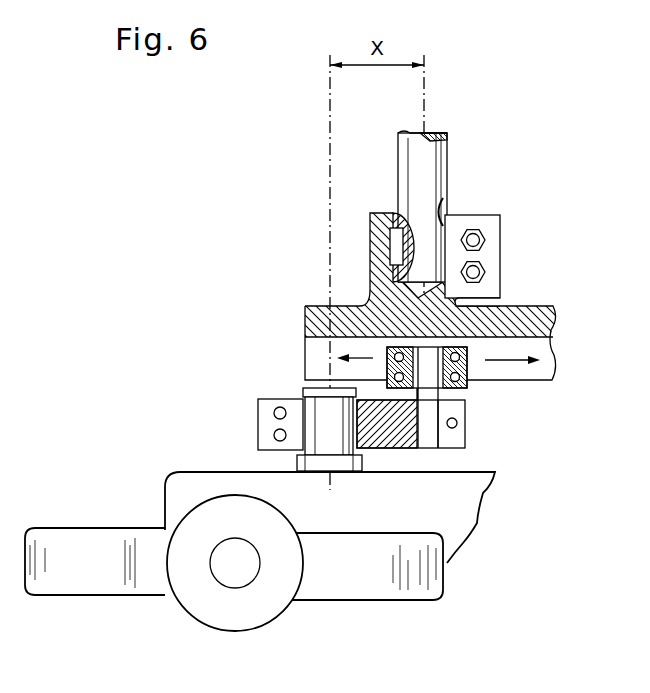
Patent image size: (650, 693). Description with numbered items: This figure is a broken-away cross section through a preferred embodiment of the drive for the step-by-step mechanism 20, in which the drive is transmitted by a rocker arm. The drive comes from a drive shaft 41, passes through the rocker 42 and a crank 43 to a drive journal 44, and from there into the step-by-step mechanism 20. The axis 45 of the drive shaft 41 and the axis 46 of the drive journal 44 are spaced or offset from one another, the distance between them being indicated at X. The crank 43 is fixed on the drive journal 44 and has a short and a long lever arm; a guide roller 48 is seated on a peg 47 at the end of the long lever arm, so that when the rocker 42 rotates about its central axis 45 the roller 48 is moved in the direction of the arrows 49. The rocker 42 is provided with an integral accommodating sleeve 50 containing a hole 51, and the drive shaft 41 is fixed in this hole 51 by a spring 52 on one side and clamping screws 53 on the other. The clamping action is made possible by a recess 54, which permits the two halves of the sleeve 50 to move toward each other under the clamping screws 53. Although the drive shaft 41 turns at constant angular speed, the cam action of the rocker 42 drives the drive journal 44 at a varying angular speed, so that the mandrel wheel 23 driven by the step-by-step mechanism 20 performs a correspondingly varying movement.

The step-by-step mechanism 20 is at (187, 486).
The mandrel wheel 23 is at (89, 585).
The drive shaft 41 is at (430, 153).
The rocker 42 is at (546, 322).
The crank 43 is at (268, 420).
The drive journal 44 is at (312, 402).
The axis of drive shaft 45 is at (427, 91).
The axis of drive journal 46 is at (330, 98).
The peg 47 is at (457, 448).
The guide roller 48 is at (466, 388).
The arrows 49 is at (317, 349).
The accommodating sleeve 50 is at (380, 284).
The hole 51 is at (447, 199).
The spring 52 is at (395, 243).
The clamping screws 53 is at (479, 270).
The recess 54 is at (487, 305).